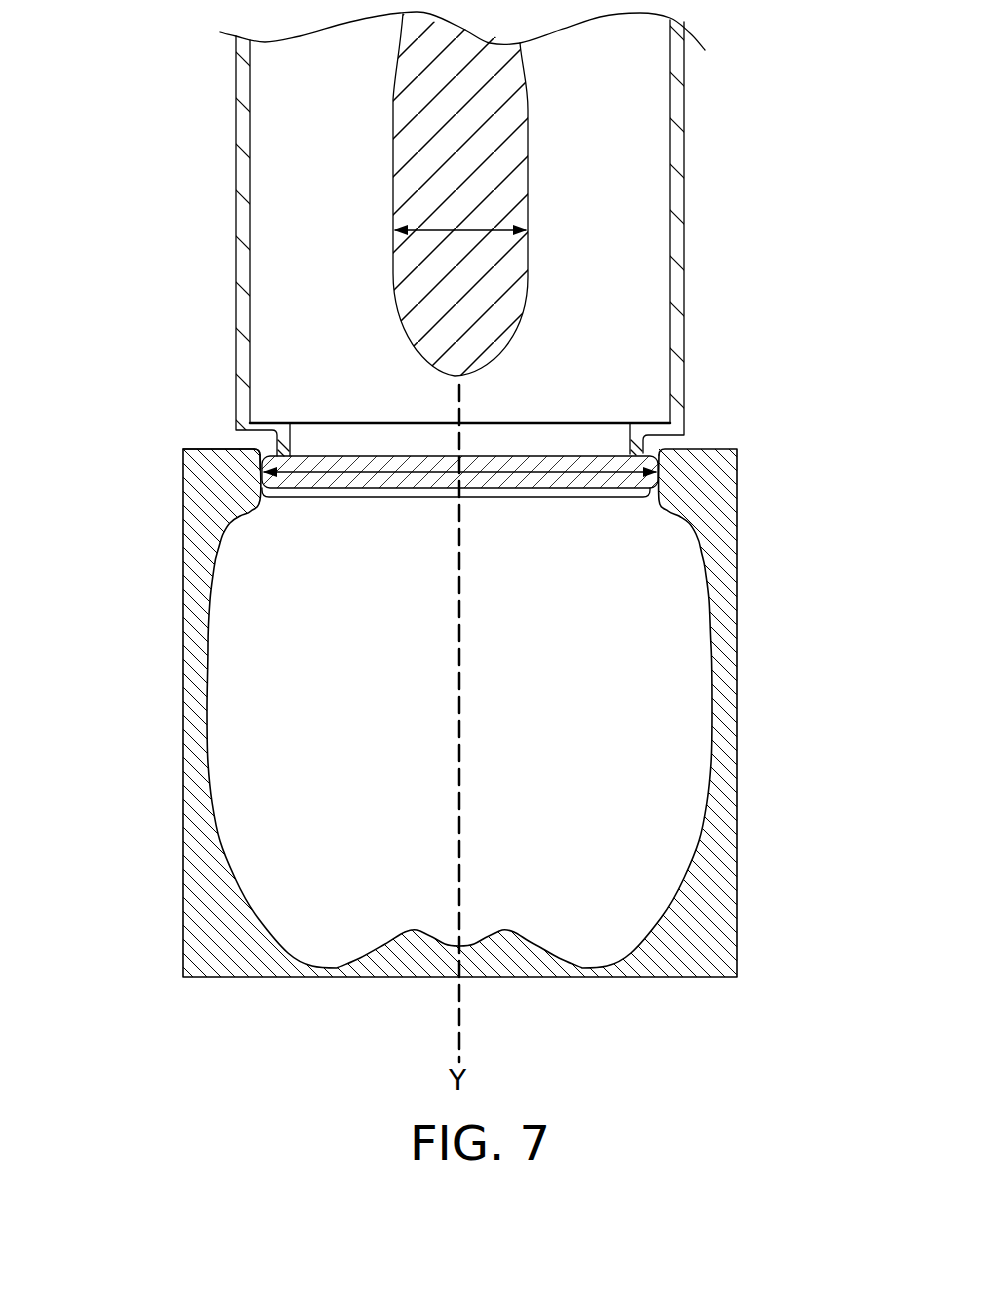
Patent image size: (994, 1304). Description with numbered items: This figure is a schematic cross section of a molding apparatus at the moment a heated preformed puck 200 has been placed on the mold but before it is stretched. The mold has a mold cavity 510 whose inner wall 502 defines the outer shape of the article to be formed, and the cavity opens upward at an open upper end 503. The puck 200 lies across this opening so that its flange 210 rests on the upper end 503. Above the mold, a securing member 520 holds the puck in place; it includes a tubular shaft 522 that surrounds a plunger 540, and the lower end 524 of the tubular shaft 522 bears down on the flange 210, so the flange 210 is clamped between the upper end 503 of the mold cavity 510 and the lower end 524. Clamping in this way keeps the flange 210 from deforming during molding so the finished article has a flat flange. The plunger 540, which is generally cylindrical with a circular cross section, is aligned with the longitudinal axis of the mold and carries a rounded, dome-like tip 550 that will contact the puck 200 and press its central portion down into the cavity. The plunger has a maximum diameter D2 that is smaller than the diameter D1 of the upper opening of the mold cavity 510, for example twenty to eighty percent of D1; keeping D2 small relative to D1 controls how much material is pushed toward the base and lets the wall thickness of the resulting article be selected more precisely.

The heated preformed puck 200 is at (660, 470).
The flange 210 is at (258, 441).
The inner wall 502 is at (212, 827).
The open upper end 503 is at (233, 455).
The mold cavity 510 is at (392, 675).
The securing member 520 is at (386, 237).
The tubular shaft 522 is at (197, 118).
The lower end 524 is at (637, 460).
The plunger 540 is at (563, 170).
The tip 550 is at (458, 378).
The diameter of upper opening of mold cavity D1 is at (421, 470).
The maximum diameter of plunger D2 is at (470, 228).